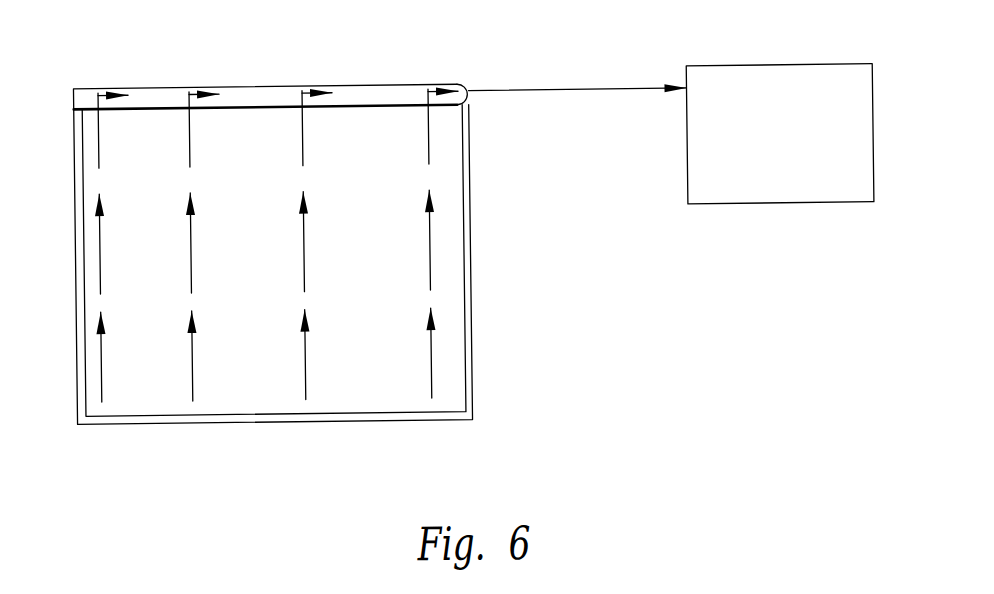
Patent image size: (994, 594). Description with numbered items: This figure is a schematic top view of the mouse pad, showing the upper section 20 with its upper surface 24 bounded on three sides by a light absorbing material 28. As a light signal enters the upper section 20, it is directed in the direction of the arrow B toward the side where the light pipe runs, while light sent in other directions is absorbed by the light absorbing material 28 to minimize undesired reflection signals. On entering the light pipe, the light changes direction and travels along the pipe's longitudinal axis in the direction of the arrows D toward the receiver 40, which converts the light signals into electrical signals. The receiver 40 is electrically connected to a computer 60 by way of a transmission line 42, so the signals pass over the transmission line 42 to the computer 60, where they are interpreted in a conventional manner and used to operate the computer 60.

The upper section 20 is at (441, 374).
The upper surface 24 is at (448, 157).
The light absorbing material 28 is at (76, 171).
The receiver 40 is at (470, 85).
The transmission line 42 is at (577, 94).
The computer 60 is at (786, 210).
The arrow B is at (190, 254).
The arrows D is at (100, 92).